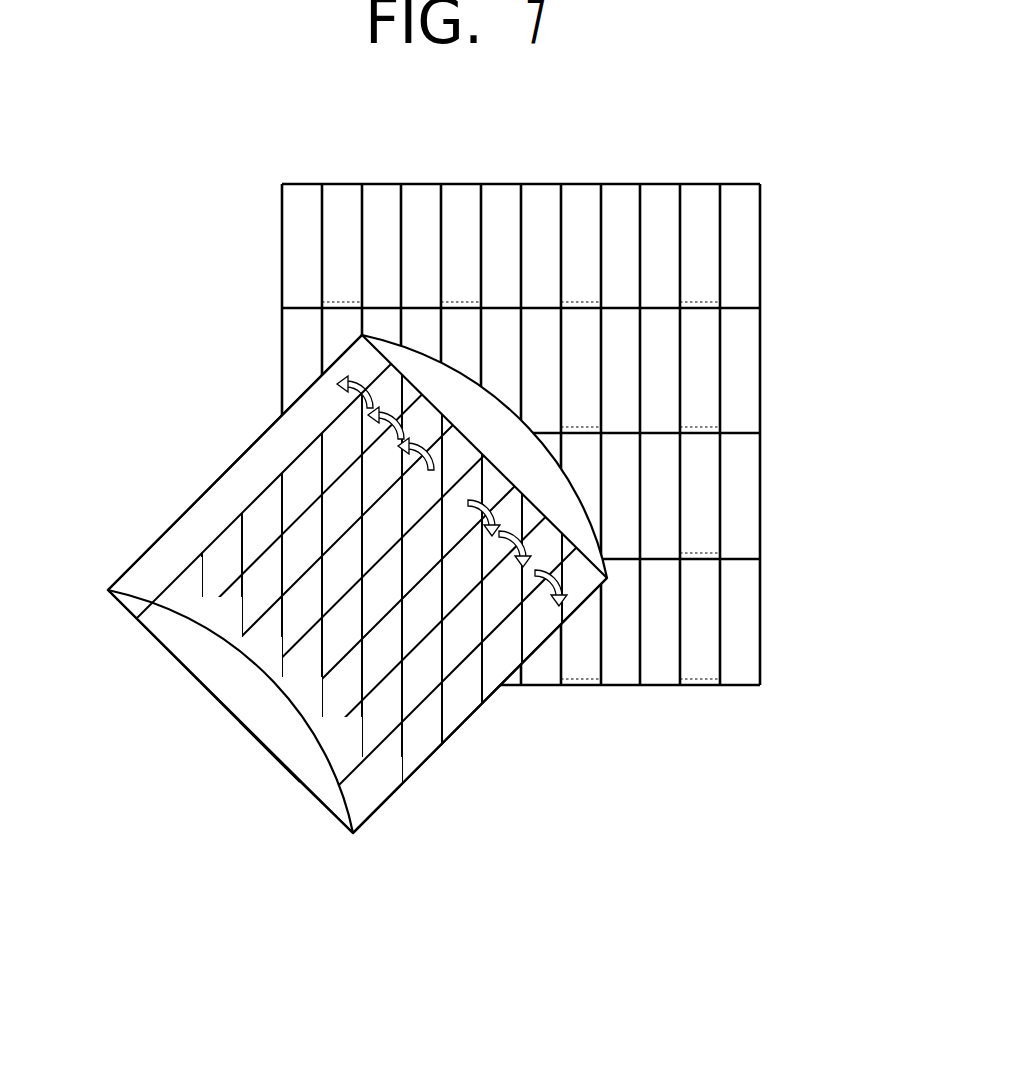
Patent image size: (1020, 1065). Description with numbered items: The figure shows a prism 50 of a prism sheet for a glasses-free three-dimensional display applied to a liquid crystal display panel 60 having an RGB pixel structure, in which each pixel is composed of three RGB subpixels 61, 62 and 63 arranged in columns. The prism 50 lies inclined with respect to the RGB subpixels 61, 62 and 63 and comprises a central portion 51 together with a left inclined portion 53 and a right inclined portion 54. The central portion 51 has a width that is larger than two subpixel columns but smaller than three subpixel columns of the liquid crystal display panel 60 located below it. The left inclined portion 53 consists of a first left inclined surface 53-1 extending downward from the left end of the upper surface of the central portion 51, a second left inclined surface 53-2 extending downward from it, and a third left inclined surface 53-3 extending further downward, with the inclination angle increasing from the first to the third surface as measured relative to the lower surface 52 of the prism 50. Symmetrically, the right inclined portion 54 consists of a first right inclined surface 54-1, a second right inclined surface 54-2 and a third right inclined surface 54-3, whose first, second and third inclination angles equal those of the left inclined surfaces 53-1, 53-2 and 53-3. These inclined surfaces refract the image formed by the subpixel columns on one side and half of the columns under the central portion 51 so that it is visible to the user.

The prism 50 is at (326, 530).
The central portion 51 is at (262, 675).
The lower surface 52 is at (207, 692).
The left inclined portion 53 is at (170, 640).
The first left inclined surface 53-1 is at (178, 692).
The second left inclined surface 53-2 is at (178, 602).
The third left inclined surface 53-3 is at (140, 582).
The right inclined portion 54 is at (262, 735).
The first right inclined surface 54-1 is at (308, 727).
The second right inclined surface 54-2 is at (333, 768).
The third right inclined surface 54-3 is at (362, 810).
The liquid crystal display panel 60 is at (581, 405).
The RGB subpixel 61 is at (658, 183).
The RGB subpixel 62 is at (698, 183).
The RGB subpixel 63 is at (738, 183).